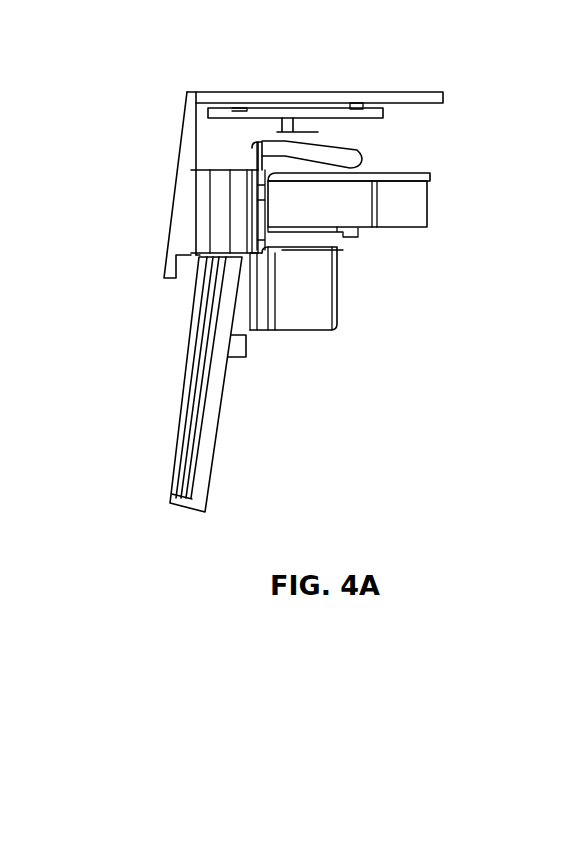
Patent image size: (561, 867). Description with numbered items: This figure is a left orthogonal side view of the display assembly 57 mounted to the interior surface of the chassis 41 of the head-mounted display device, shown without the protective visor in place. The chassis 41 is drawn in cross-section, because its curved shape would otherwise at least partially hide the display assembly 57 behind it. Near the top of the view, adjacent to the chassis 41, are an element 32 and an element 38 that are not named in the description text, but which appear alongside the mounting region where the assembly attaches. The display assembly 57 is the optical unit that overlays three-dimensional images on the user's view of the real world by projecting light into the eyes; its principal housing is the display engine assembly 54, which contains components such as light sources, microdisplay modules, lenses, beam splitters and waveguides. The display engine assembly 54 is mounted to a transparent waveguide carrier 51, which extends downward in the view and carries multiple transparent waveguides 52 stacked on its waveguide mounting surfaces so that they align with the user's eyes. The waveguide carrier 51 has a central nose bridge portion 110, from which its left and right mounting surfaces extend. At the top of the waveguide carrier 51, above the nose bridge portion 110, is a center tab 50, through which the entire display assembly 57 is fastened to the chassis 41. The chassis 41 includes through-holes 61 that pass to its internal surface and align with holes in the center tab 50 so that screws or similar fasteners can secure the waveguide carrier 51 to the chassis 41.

The lever 32 is at (363, 163).
The pivot post 38 is at (296, 130).
The chassis 41 is at (177, 200).
The center tab 50 is at (200, 240).
The waveguide carrier 51 is at (208, 483).
The transparent waveguides 52 is at (176, 428).
The display engine assembly 54 is at (402, 230).
The display assembly 57 is at (455, 164).
The through-holes 61 is at (225, 118).
The central nose bridge portion 110 is at (246, 357).